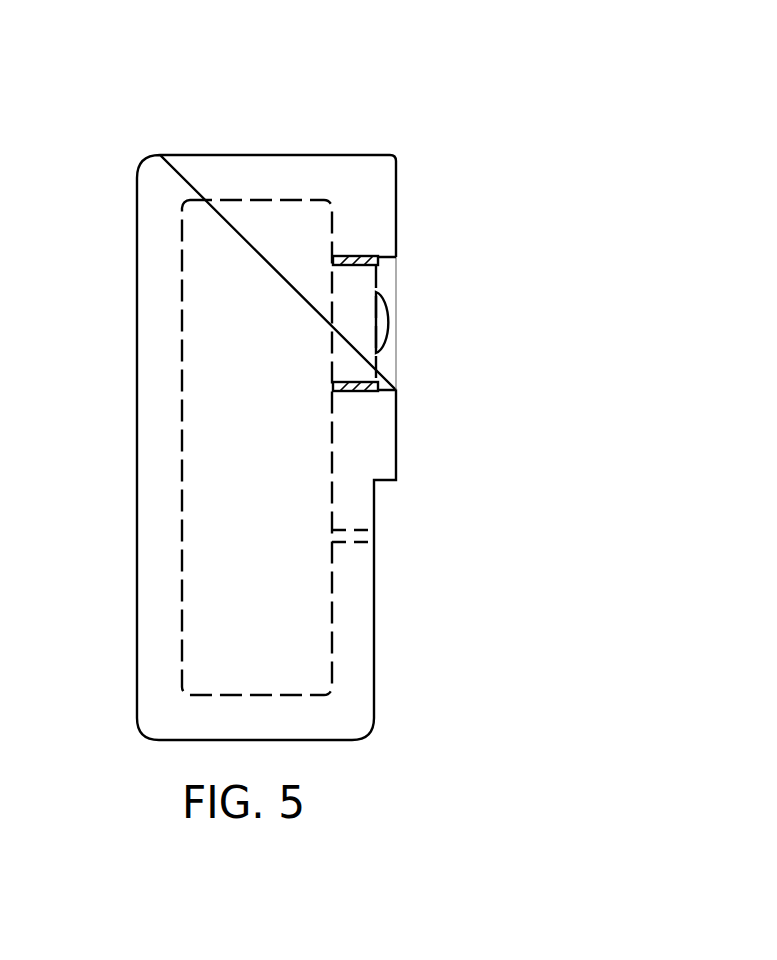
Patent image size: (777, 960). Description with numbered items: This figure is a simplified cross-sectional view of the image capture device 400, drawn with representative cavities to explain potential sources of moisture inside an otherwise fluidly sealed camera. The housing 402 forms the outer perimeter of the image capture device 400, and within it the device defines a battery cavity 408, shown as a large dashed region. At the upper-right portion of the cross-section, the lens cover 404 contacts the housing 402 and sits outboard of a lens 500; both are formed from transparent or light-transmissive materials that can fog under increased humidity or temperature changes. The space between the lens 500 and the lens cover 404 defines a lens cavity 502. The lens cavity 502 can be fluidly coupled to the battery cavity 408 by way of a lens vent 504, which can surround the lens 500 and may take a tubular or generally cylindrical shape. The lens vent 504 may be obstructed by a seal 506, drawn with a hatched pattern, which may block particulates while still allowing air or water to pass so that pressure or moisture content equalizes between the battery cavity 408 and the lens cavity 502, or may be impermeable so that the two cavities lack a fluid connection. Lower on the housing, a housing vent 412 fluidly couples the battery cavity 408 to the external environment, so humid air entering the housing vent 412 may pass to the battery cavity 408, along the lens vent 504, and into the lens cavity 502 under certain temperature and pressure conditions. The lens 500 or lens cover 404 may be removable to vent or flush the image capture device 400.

The image capture device 400 is at (118, 120).
The housing 402 is at (383, 153).
The lens cover 404 is at (397, 273).
The battery cavity 408 is at (181, 290).
The housing vent 412 is at (375, 535).
The lens 500 is at (391, 307).
The lens cavity 502 is at (398, 374).
The lens vent 504 is at (363, 255).
The seal 506 is at (377, 256).